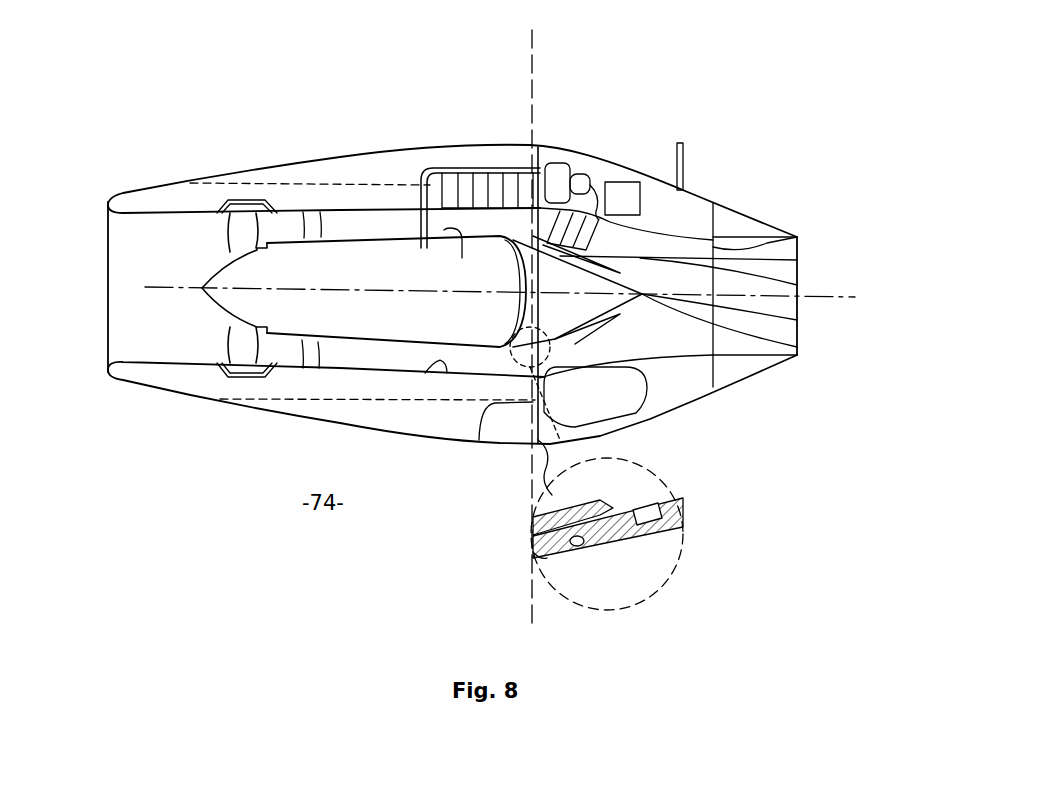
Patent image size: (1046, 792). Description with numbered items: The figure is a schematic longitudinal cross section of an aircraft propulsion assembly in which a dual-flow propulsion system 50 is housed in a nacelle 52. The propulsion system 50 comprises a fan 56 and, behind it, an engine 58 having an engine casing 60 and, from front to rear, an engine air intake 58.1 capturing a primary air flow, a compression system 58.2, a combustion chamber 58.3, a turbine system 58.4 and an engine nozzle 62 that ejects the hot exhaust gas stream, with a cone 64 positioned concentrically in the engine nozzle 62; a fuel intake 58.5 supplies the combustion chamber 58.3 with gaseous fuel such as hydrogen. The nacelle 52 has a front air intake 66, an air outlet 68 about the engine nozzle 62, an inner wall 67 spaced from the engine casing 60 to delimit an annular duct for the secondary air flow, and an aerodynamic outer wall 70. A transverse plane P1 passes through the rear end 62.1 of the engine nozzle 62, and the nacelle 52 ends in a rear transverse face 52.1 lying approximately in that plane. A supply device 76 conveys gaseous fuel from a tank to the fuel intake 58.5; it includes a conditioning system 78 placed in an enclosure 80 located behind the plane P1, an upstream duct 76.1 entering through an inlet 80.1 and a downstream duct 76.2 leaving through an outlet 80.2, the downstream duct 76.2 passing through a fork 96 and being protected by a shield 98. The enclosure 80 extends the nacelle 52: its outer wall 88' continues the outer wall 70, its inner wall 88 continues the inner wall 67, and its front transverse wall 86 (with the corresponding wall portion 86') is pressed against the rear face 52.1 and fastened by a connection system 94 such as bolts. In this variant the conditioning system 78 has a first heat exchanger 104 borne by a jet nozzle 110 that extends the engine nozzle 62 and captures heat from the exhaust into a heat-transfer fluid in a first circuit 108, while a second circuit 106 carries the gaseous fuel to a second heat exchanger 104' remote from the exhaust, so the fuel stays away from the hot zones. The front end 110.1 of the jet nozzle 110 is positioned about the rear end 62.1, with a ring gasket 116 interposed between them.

The propulsion system 50 is at (386, 357).
The nacelle 52 is at (303, 427).
The rear transverse face 52.1 is at (525, 452).
The fan 56 is at (215, 333).
The engine 58 is at (341, 345).
The engine air intake 58.1 is at (252, 248).
The compression system 58.2 is at (313, 277).
The combustion chamber 58.3 is at (403, 277).
The turbine system 58.4 is at (503, 273).
The fuel intake 58.5 is at (422, 248).
The engine casing 60 is at (353, 235).
The engine nozzle 62 is at (541, 244).
The rear end 62.1 is at (610, 508).
The cone 64 is at (797, 347).
The air intake 66 is at (123, 193).
The inner wall 67 is at (447, 373).
The air outlet 68 is at (527, 175).
The aerodynamic outer wall 70 is at (240, 400).
The supply device 76 is at (663, 160).
The upstream duct 76.1 is at (684, 162).
The downstream duct 76.2 is at (436, 168).
The conditioning system 78 is at (625, 172).
The enclosure 80 is at (669, 158).
The inlet 80.1 is at (686, 200).
The outlet 80.2 is at (557, 162).
The front transverse wall 86 is at (499, 442).
The fan nozzle upper portion 86' is at (769, 219).
The inner wall 88 is at (805, 228).
The outer wall 88' is at (764, 398).
The connection system 94 is at (545, 432).
The fork 96 is at (459, 260).
The shield 98 is at (522, 200).
The first heat exchanger 104 is at (692, 426).
The second heat exchanger 104' is at (711, 261).
The second circuit 106 is at (593, 160).
The first circuit 108 is at (797, 285).
The jet nozzle 110 is at (640, 566).
The front end 110.1 is at (547, 558).
The ring gasket 116 is at (662, 512).
The transverse plane P1 is at (530, 562).